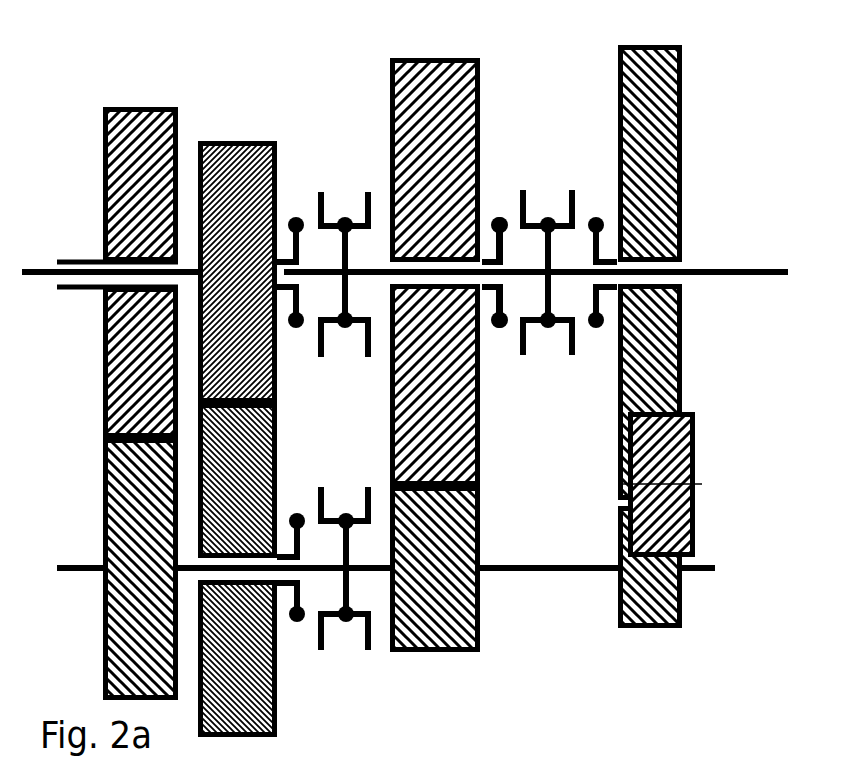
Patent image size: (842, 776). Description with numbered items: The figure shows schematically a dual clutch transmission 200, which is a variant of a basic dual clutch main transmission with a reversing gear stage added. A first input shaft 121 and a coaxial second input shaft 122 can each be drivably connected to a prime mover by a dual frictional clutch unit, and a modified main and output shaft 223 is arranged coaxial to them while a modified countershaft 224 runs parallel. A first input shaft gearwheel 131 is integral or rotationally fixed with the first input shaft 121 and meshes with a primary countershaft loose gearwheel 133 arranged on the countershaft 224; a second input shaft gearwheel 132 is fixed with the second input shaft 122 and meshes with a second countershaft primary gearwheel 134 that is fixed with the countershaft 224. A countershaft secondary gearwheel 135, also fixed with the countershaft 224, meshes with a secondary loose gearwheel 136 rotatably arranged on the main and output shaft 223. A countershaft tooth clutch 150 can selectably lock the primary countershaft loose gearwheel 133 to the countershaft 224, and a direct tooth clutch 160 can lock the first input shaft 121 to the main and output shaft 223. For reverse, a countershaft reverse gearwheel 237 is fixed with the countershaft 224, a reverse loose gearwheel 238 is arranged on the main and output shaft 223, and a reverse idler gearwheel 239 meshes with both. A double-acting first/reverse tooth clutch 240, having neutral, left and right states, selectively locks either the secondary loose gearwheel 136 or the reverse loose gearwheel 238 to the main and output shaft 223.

The dual clutch transmission 200 is at (115, 75).
The first input shaft 121 is at (44, 268).
The second input shaft 122 is at (65, 291).
The main and output shaft 223 is at (731, 268).
The countershaft 224 is at (65, 565).
The first input shaft gearwheel 131 is at (236, 140).
The second input shaft gearwheel 132 is at (103, 121).
The primary countershaft loose gearwheel 133 is at (278, 710).
The second countershaft primary gearwheel 134 is at (103, 640).
The countershaft secondary gearwheel 135 is at (483, 618).
The secondary loose gearwheel 136 is at (481, 73).
The countershaft tooth clutch 150 is at (348, 641).
The direct tooth clutch 160 is at (321, 177).
The countershaft reverse gearwheel 237 is at (685, 613).
The reverse loose gearwheel 238 is at (684, 332).
The reverse idler gearwheel 239 is at (697, 450).
The first/reverse tooth clutch 240 is at (548, 344).